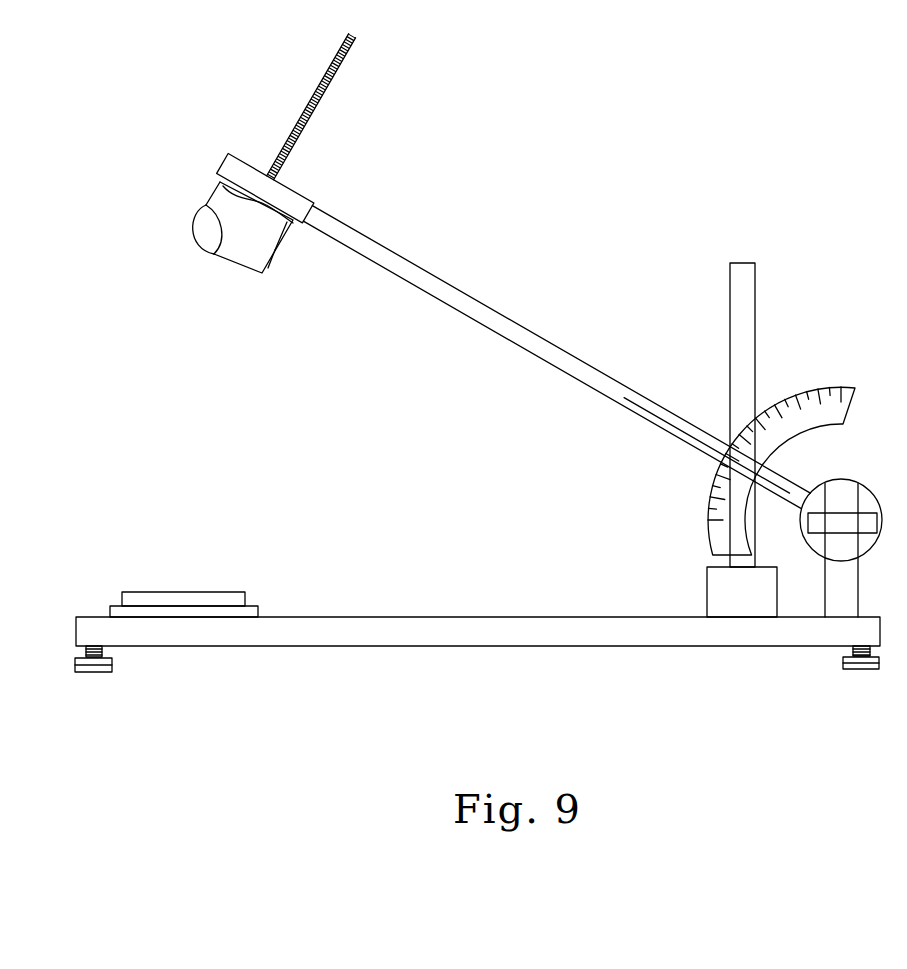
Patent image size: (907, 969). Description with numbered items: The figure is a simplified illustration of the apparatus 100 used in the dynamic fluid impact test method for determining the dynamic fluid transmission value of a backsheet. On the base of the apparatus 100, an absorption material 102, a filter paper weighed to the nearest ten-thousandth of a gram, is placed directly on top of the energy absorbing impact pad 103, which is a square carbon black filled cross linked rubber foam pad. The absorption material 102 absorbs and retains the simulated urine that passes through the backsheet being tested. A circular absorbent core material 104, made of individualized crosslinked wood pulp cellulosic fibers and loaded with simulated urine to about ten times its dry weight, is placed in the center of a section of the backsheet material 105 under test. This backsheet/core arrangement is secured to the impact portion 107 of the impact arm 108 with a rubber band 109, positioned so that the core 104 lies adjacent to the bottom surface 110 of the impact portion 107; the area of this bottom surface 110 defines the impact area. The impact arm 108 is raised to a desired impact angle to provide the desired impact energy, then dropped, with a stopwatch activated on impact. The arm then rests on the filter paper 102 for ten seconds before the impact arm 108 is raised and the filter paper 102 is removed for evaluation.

The apparatus 100 is at (590, 160).
The absorption material 102 is at (187, 598).
The energy absorbing impact pad 103 is at (160, 610).
The absorbent core material 104 is at (210, 235).
The backsheet material 105 is at (260, 277).
The impact portion 107 is at (215, 212).
The impact arm 108 is at (455, 297).
The rubber band 109 is at (287, 235).
The bottom surface 110 is at (223, 240).